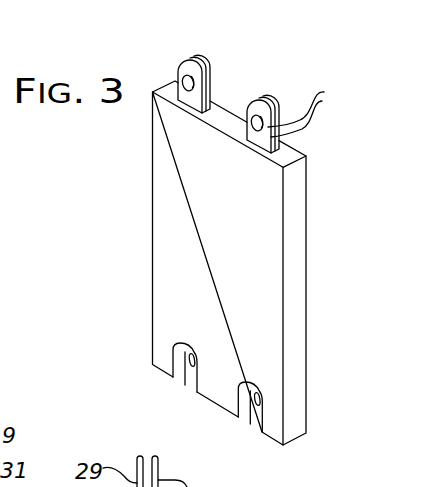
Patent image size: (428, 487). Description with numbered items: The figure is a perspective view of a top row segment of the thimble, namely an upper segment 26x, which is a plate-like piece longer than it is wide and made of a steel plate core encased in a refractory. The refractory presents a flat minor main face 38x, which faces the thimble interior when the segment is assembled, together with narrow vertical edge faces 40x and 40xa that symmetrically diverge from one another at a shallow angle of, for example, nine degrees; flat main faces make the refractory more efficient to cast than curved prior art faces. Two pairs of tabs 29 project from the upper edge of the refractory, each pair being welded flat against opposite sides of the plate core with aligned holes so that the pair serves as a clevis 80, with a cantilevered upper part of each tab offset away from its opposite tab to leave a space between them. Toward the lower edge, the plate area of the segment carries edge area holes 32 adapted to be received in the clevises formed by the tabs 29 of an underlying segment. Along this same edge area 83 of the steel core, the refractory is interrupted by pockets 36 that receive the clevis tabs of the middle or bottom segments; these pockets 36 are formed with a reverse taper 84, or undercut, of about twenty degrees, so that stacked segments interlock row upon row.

The upper segment 26x is at (203, 263).
The main face 38x is at (253, 298).
The edge face 40x is at (297, 262).
The edge face 40xa is at (151, 73).
The clevis 80 is at (255, 84).
The tab 29 is at (313, 108).
The reverse taper 84 is at (173, 349).
The edge area hole 32 is at (250, 413).
The pocket 36 is at (168, 377).
The edge area 83 is at (177, 394).